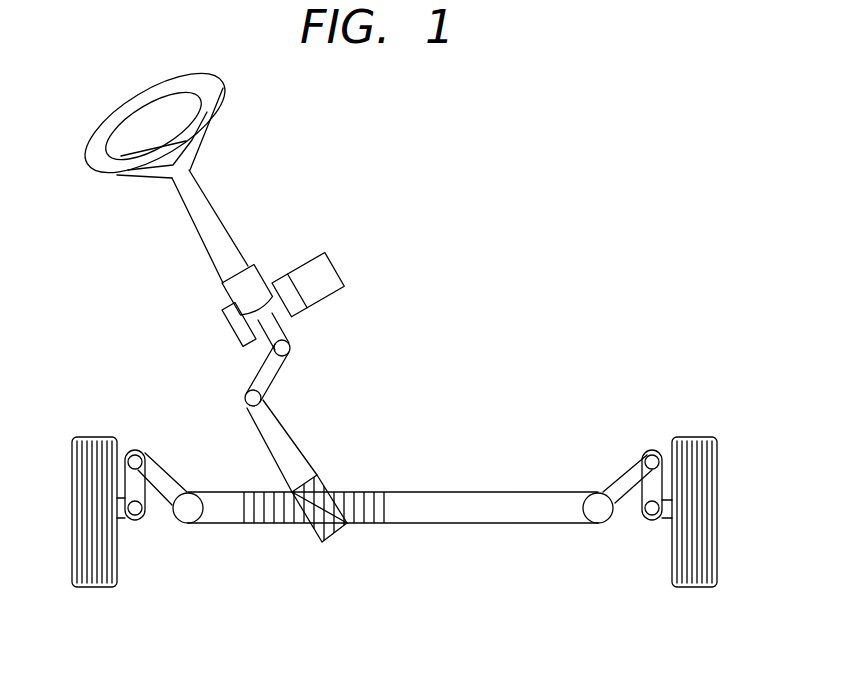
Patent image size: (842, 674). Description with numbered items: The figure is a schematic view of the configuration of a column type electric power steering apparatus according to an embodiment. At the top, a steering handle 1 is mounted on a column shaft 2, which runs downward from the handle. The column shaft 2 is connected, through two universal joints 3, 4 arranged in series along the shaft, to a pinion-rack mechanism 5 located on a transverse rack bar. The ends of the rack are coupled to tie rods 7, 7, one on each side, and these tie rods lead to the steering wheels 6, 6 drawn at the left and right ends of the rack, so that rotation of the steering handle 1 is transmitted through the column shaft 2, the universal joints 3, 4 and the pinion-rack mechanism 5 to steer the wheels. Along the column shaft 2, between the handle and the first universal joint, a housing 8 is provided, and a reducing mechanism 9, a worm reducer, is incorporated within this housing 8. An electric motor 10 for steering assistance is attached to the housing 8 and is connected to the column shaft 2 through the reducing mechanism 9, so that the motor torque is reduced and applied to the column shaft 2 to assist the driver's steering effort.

The steering handle 1 is at (210, 103).
The column shaft 2 is at (207, 222).
The universal joint 3 is at (285, 349).
The universal joint 4 is at (248, 400).
The pinion-rack mechanism 5 is at (332, 478).
The steering wheels 6 is at (92, 587).
The tie rods 7 is at (185, 527).
The housing 8 is at (253, 320).
The reducing mechanism 9 is at (272, 274).
The electric motor 10 is at (333, 277).